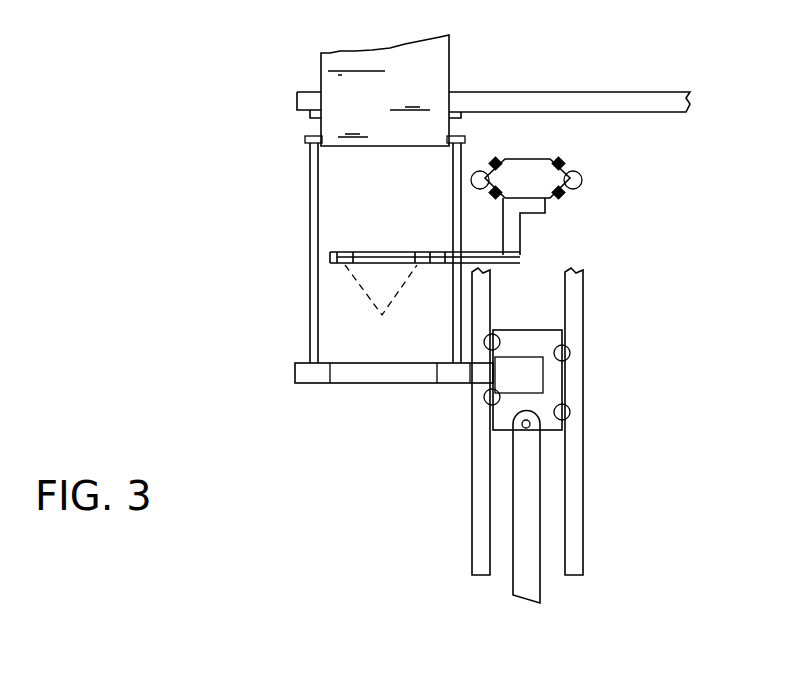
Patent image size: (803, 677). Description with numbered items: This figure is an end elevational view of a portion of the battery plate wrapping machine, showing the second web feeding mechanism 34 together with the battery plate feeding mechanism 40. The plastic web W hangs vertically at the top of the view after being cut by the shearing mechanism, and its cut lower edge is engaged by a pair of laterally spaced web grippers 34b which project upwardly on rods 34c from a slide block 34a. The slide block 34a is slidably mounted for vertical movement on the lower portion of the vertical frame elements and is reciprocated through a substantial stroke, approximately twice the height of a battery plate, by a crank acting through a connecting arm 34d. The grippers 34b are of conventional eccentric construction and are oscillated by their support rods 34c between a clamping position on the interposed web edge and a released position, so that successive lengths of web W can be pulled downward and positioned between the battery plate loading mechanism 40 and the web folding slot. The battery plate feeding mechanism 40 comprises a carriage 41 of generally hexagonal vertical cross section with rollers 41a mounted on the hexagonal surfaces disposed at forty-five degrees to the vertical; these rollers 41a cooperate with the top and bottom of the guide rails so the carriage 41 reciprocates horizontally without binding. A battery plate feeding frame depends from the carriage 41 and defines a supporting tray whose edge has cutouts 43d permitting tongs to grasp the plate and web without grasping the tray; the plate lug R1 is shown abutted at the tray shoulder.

The web W is at (337, 87).
The web grippers 34b is at (306, 137).
The rods 34c is at (452, 192).
The plate R1 is at (385, 250).
The cutouts 43d is at (381, 303).
The battery plate feeding mechanism 40 is at (568, 189).
The carriage 41 is at (527, 172).
The rollers 41a is at (568, 197).
The second web feeding mechanism 34 is at (567, 435).
The slide block 34a is at (555, 377).
The connecting arm 34d is at (527, 502).